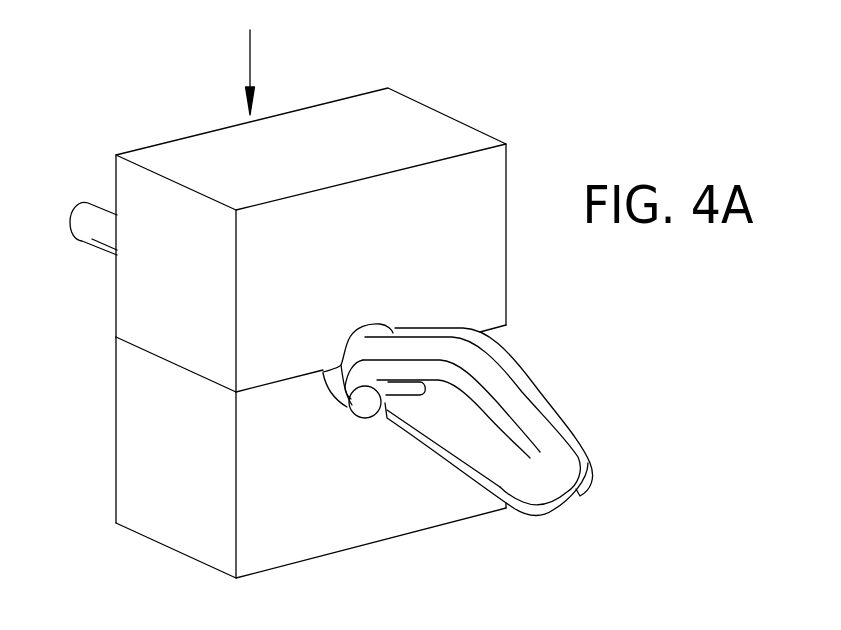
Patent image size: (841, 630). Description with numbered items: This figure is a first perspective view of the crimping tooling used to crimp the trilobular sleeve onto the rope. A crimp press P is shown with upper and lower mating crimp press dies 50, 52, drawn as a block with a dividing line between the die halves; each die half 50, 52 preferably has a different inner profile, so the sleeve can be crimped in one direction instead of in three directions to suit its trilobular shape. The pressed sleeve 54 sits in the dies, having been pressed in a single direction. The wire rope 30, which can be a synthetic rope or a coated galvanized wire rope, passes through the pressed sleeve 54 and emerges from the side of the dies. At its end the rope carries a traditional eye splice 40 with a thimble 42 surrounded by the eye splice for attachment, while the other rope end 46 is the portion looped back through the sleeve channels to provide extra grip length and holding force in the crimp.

The crimp press P is at (250, 59).
The wire rope 30 is at (97, 238).
The eye splice 40 is at (459, 420).
The thimble 42 is at (548, 390).
The end of the rope 46 is at (368, 405).
The upper crimp press die 50 is at (468, 116).
The lower crimp press die 52 is at (399, 545).
The pressed sleeve 54 is at (342, 385).